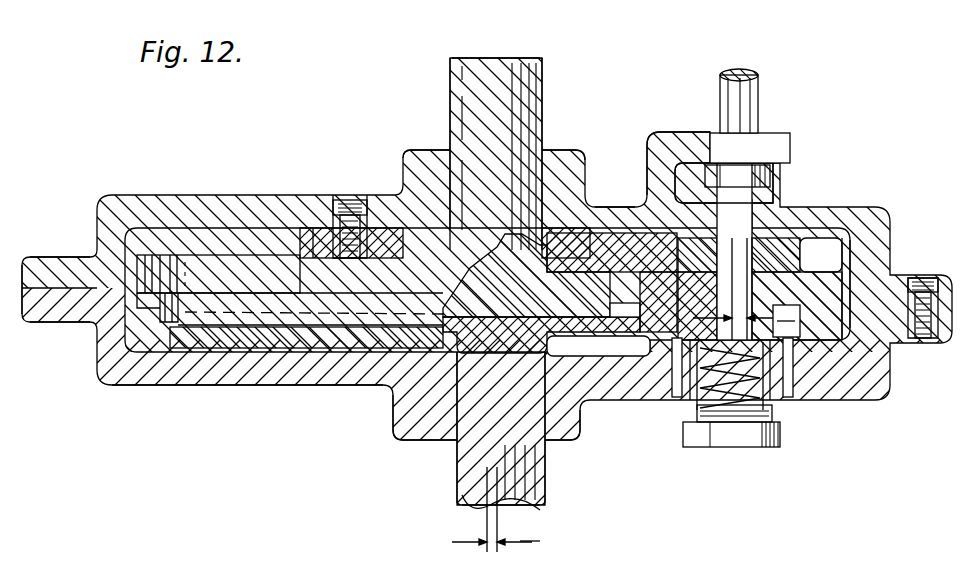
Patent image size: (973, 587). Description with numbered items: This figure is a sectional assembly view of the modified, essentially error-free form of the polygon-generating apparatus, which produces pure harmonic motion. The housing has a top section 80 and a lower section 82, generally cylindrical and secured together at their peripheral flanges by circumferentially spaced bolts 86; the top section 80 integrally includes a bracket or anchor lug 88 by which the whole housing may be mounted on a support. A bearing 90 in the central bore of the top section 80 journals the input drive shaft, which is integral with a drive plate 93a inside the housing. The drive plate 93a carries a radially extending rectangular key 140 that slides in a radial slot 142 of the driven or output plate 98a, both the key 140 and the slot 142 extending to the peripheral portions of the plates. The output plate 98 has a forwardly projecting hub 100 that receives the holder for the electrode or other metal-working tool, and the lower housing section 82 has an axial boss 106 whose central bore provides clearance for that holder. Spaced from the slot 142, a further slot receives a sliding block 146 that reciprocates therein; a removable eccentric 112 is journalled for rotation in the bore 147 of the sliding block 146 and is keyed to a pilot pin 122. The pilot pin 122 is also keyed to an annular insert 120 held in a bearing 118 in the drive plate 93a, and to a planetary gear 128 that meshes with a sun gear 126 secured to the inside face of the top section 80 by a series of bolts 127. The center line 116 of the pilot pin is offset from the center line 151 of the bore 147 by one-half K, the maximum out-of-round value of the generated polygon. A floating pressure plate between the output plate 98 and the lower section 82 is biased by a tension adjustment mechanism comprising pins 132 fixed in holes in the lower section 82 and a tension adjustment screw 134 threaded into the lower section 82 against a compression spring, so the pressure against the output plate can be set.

The top housing section 80 is at (186, 195).
The lower housing section 82 is at (120, 386).
The bolts 86 is at (924, 340).
The anchor lug 88 is at (672, 132).
The bearing 90 is at (440, 150).
The drive plate 93a is at (225, 262).
The output plate 98 is at (522, 58).
The output plate 98a is at (195, 350).
The hub 100 is at (457, 468).
The axial boss 106 is at (392, 414).
The eccentric 112 is at (672, 305).
The center line 116 is at (736, 240).
The bearing 118 is at (797, 306).
The insert 120 is at (797, 255).
The pilot pin 122 is at (700, 240).
The sun gear 126 is at (385, 240).
The bolts 127 is at (345, 200).
The planetary gear 128 is at (632, 232).
The pins 132 is at (790, 404).
The tension adjustment screw 134 is at (734, 448).
The rectangular key 140 is at (110, 328).
The radial slot 142 is at (606, 338).
The sliding block 146 is at (852, 352).
The bore 147 is at (820, 400).
The center line 151 is at (765, 248).